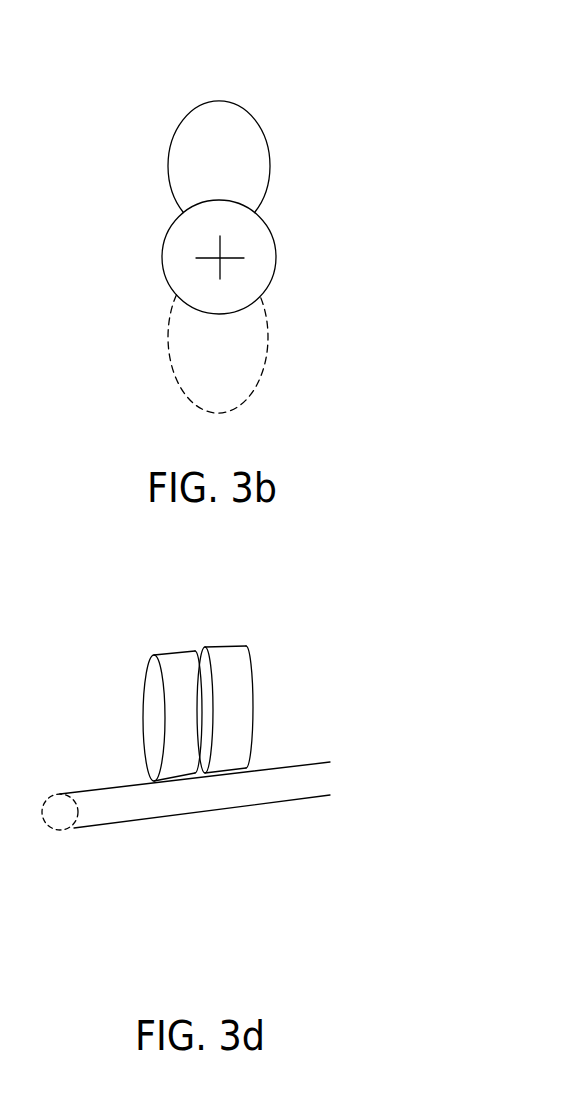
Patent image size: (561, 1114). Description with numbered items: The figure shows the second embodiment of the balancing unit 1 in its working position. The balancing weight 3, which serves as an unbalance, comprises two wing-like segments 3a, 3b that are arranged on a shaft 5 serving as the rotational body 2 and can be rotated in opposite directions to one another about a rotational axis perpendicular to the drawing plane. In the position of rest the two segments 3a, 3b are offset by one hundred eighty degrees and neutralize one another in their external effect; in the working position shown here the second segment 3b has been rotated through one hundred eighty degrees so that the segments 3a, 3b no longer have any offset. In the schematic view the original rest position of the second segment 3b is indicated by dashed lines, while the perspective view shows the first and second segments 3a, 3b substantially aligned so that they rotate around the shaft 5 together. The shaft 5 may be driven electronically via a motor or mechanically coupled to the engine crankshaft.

In FIG. 3b, the balancing unit 1 is at (84, 31).
In FIG. 3b, the rotational body 2 is at (258, 249).
In FIG. 3d, the rotational body 2 is at (296, 765).
In FIG. 3b, the shaft 5 is at (219, 257).
In FIG. 3d, the shaft 5 is at (186, 796).
In FIG. 3b, the balancing weight 3 is at (200, 118).
In FIG. 3b, the first segment 3a is at (219, 157).
In FIG. 3d, the first segment 3a is at (160, 654).
In FIG. 3b, the second segment 3b is at (218, 354).
In FIG. 3d, the second segment 3b is at (225, 650).